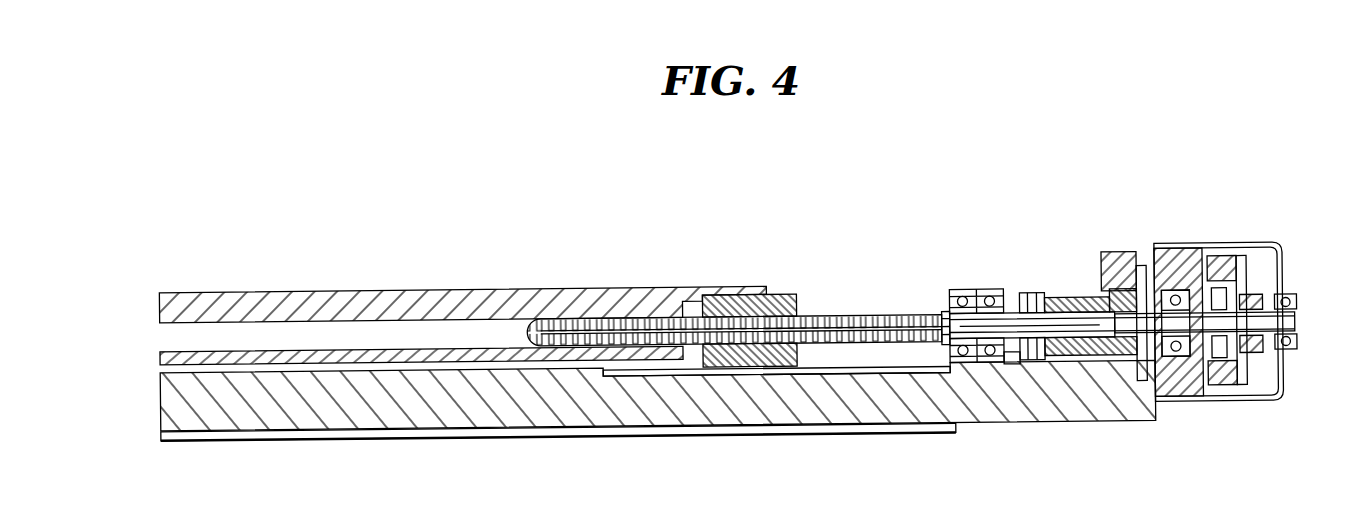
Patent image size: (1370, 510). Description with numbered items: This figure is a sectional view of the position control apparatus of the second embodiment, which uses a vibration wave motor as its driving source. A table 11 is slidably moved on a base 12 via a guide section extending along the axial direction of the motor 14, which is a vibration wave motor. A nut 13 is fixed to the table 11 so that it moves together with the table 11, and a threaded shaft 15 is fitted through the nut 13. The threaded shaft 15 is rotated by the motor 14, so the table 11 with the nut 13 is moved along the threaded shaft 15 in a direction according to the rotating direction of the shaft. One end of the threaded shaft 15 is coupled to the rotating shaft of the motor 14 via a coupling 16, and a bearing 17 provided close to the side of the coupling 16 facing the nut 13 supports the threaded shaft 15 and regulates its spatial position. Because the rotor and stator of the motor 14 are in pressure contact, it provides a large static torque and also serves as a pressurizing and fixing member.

The table 11 is at (441, 285).
The base 12 is at (462, 412).
The nut 13 is at (790, 286).
The motor 14 is at (1227, 290).
The threaded shaft 15 is at (835, 313).
The coupling 16 is at (1078, 289).
The bearing 17 is at (983, 288).